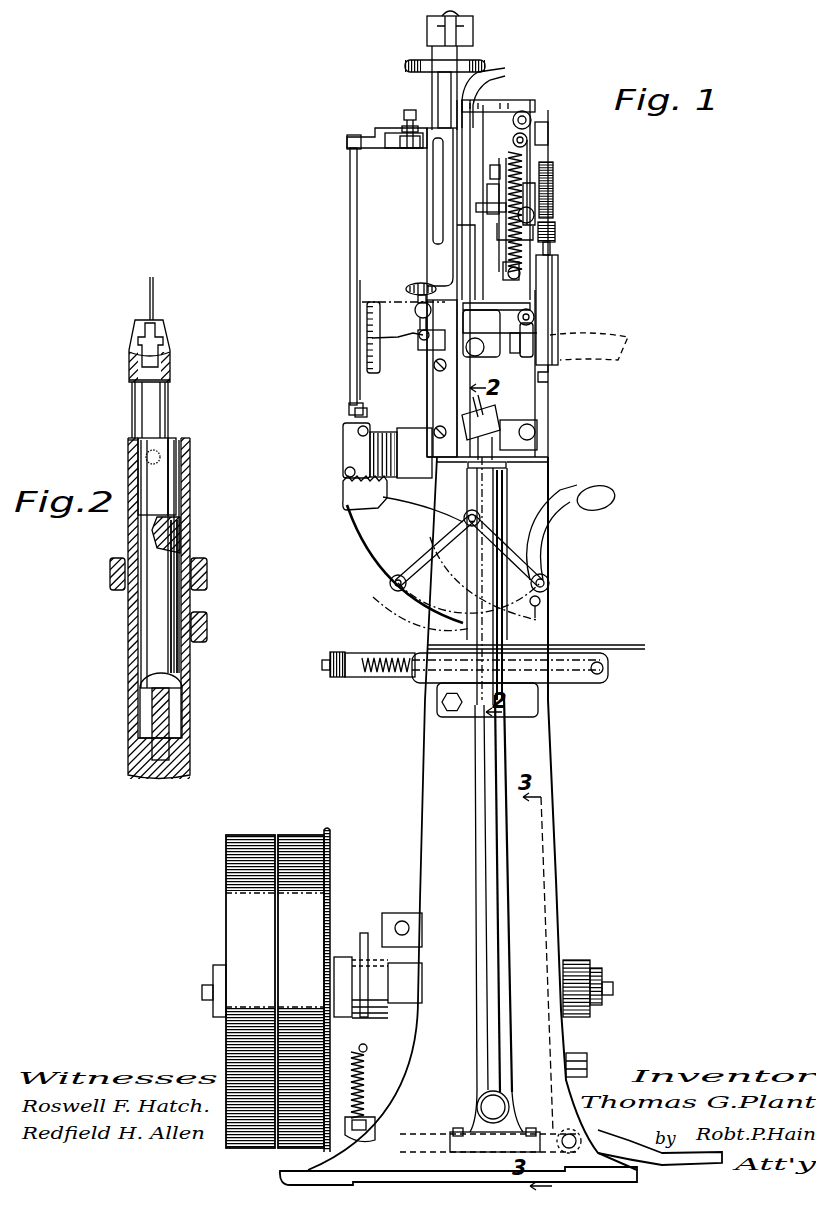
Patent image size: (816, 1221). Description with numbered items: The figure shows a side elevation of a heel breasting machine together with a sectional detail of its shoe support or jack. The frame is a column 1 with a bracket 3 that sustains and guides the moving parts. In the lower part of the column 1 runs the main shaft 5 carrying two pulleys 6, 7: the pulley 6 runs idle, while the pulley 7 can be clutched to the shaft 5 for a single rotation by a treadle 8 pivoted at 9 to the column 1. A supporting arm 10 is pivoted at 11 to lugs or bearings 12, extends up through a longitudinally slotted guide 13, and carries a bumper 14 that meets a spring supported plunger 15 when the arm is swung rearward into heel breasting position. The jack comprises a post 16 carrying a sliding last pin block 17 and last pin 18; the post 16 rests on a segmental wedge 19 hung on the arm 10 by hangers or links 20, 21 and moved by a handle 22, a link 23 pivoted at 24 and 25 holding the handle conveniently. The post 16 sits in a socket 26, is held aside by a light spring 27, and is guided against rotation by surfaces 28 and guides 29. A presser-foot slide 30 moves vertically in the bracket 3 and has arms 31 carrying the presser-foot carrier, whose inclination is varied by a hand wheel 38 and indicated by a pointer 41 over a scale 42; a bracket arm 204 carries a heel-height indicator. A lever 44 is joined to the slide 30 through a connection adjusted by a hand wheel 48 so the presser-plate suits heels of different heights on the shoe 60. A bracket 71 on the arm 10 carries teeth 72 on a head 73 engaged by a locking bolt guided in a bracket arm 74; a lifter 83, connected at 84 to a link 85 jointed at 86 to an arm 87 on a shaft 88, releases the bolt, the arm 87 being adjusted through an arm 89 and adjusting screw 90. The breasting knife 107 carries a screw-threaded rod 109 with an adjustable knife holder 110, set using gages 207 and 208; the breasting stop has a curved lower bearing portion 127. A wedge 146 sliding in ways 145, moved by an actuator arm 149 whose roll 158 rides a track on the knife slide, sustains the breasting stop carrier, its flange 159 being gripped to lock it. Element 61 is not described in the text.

In FIG. 1, the column 1 is at (430, 797).
In FIG. 1, the bracket 3 is at (427, 196).
In FIG. 1, the main shaft 5 is at (604, 1000).
In FIG. 1, the pulley 6 is at (263, 838).
In FIG. 1, the pulley 7 is at (311, 838).
In FIG. 1, the treadle 8 is at (605, 1133).
In FIG. 1, the treadle pivot 9 is at (564, 1137).
In FIG. 2, the supporting arm 10 is at (191, 762).
In FIG. 1, the supporting arm 10 is at (485, 879).
In FIG. 1, the pivot 11 is at (478, 1103).
In FIG. 1, the lugs or bearings 12 is at (475, 1132).
In FIG. 1, the longitudinally slotted guide 13 is at (570, 676).
In FIG. 1, the bumper 14 is at (470, 670).
In FIG. 1, the spring supported plunger 15 is at (385, 656).
In FIG. 2, the post 16 is at (157, 596).
In FIG. 1, the post 16 is at (509, 462).
In FIG. 2, the sliding last pin block 17 is at (175, 333).
In FIG. 2, the last pin 18 is at (170, 300).
In FIG. 2, the segmental wedge 19 is at (150, 718).
In FIG. 1, the segmental wedge 19 is at (410, 605).
In FIG. 1, the hanger or link 20 is at (393, 571).
In FIG. 1, the hanger or link 21 is at (550, 548).
In FIG. 1, the handle 22 is at (573, 505).
In FIG. 1, the link 23 is at (547, 630).
In FIG. 1, the link pivot 24 is at (455, 552).
In FIG. 1, the link pivot 25 is at (545, 604).
In FIG. 2, the socket 26 is at (168, 470).
In FIG. 2, the light spring 27 is at (180, 528).
In FIG. 2, the surfaces 28 is at (133, 440).
In FIG. 2, the guides 29 is at (176, 450).
In FIG. 1, the presser-foot slide 30 is at (430, 126).
In FIG. 1, the arms 31 is at (445, 345).
In FIG. 1, the hand wheel 38 is at (409, 287).
In FIG. 1, the finger or pointer 41 is at (393, 343).
In FIG. 1, the scale 42 is at (367, 340).
In FIG. 1, the lever 44 is at (427, 32).
In FIG. 1, the hand wheel 48 is at (405, 66).
In FIG. 1, the shoe 60 is at (618, 355).
In FIG. 1, the screws 61 is at (460, 1155).
In FIG. 1, the bracket 71 is at (348, 531).
In FIG. 1, the teeth 72 is at (345, 498).
In FIG. 1, the head portion 73 is at (370, 506).
In FIG. 1, the bracket arm 74 is at (410, 437).
In FIG. 1, the lifter 83 is at (355, 415).
In FIG. 1, the lifter connection 84 is at (349, 406).
In FIG. 1, the link 85 is at (350, 262).
In FIG. 1, the joint 86 is at (347, 142).
In FIG. 1, the arm 87 is at (372, 136).
In FIG. 1, the shaft 88 is at (532, 124).
In FIG. 1, the arm 89 is at (410, 150).
In FIG. 1, the adjusting screw 90 is at (402, 115).
In FIG. 1, the breasting knife 107 is at (558, 291).
In FIG. 1, the screw-threaded rod 109 is at (528, 192).
In FIG. 1, the adjustable nut or knife holder 110 is at (556, 232).
In FIG. 1, the lower bearing portion of breasting stop 127 is at (535, 320).
In FIG. 1, the ways 145 is at (537, 205).
In FIG. 1, the wedge 146 is at (540, 154).
In FIG. 1, the actuator or arm 149 is at (520, 248).
In FIG. 1, the roll 158 is at (478, 211).
In FIG. 1, the flange 159 is at (512, 172).
In FIG. 1, the bracket arm 204 is at (504, 69).
In FIG. 1, the upper gage 207 is at (548, 220).
In FIG. 1, the lower gage 208 is at (548, 368).